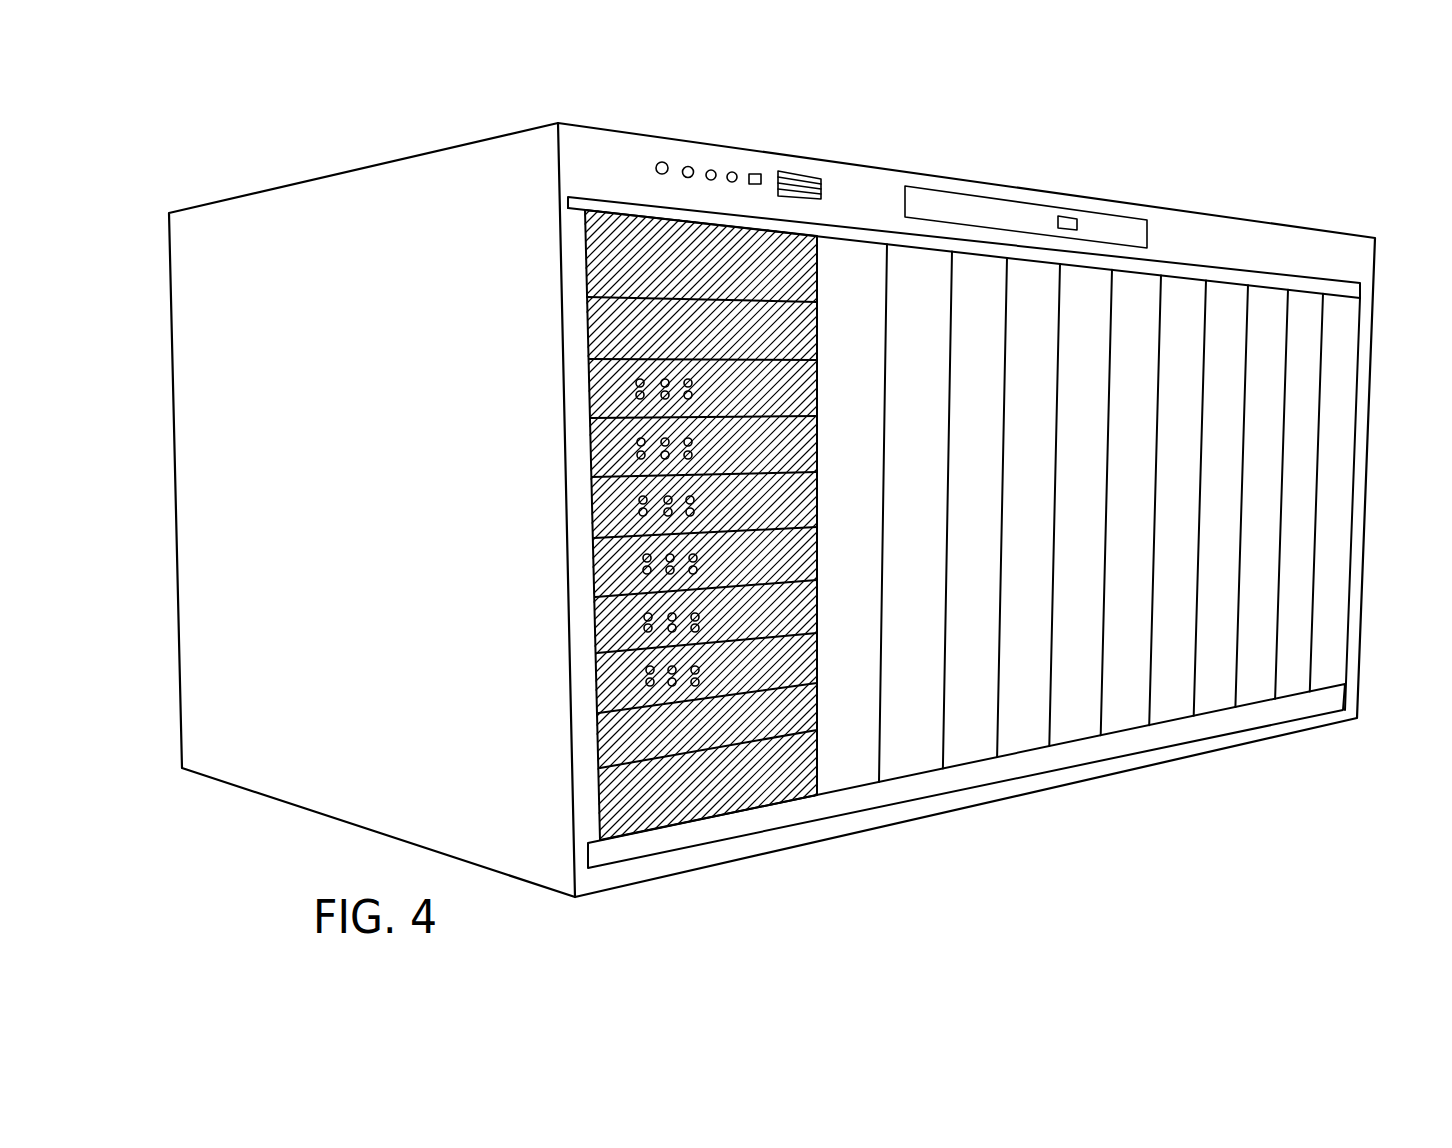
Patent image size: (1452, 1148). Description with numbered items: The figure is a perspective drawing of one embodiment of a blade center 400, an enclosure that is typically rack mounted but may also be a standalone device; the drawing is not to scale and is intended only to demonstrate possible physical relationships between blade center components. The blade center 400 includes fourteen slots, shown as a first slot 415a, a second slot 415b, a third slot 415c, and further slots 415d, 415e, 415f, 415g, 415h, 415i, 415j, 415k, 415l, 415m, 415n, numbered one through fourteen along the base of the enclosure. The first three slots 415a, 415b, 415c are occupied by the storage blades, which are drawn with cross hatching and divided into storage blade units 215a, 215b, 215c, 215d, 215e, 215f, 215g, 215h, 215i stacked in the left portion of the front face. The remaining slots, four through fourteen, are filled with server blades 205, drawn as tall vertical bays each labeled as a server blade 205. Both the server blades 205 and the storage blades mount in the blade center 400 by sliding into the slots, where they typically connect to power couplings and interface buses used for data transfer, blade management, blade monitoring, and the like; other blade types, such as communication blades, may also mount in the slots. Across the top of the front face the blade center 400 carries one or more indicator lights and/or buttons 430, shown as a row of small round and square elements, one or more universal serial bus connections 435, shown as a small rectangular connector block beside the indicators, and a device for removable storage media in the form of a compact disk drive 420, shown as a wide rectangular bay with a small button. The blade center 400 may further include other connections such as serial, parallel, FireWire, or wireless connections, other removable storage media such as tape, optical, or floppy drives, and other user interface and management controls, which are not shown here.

The blade center 400 is at (442, 104).
The indicator lights and/or buttons 430 is at (662, 160).
The universal serial bus connections 435 is at (801, 169).
The compact disk drive 420 is at (1041, 198).
The server blades 205 is at (868, 384).
The storage blade 215a is at (589, 252).
The storage blade 215b is at (589, 312).
The storage blade 215c is at (594, 397).
The storage blade 215d is at (595, 456).
The storage blade 215e is at (595, 517).
The storage blade 215f is at (591, 576).
The storage blade 215g is at (595, 634).
The storage blade 215h is at (597, 692).
The storage blade 215i is at (594, 744).
The first slot 415a is at (633, 857).
The second slot 415b is at (718, 843).
The third slot 415c is at (790, 827).
The slot 415d is at (857, 811).
The slot 415e is at (920, 799).
The slot 415f is at (979, 785).
The slot 415g is at (1028, 763).
The slot 415h is at (1078, 760).
The slot 415i is at (1128, 750).
The slot 415j is at (1177, 738).
The slot 415k is at (1227, 728).
The slot 415l is at (1262, 720).
The slot 415m is at (1300, 713).
The slot 415n is at (1333, 708).